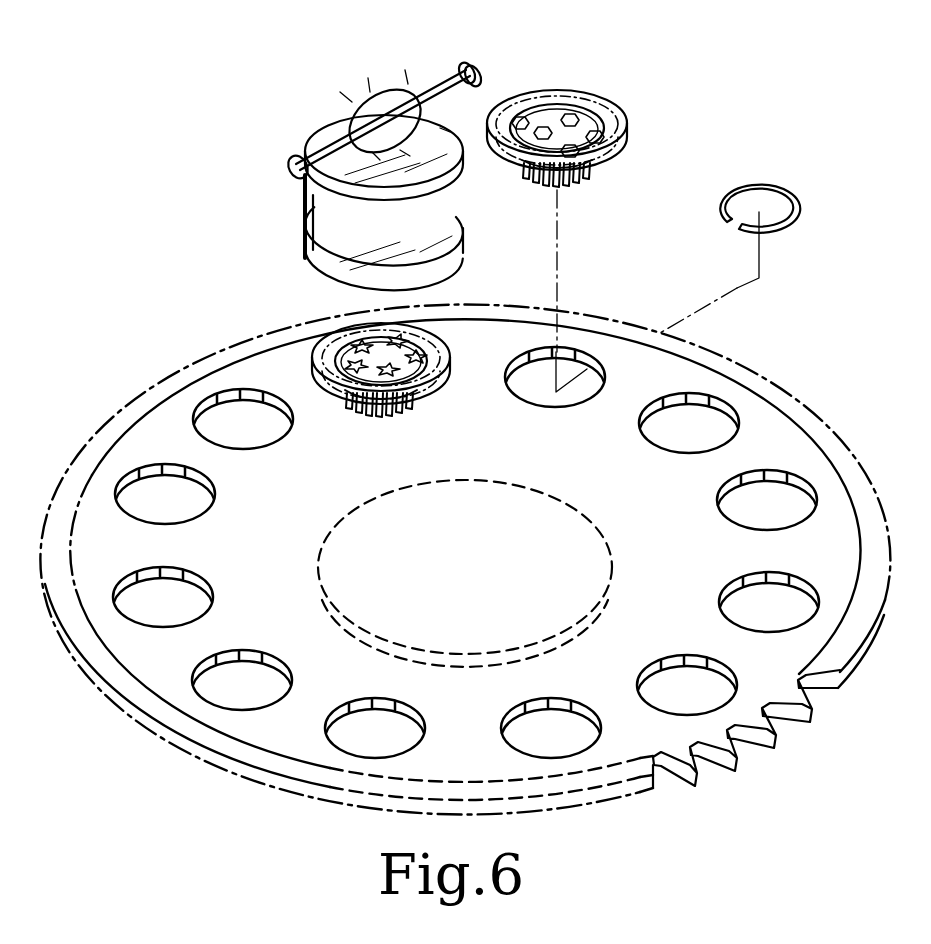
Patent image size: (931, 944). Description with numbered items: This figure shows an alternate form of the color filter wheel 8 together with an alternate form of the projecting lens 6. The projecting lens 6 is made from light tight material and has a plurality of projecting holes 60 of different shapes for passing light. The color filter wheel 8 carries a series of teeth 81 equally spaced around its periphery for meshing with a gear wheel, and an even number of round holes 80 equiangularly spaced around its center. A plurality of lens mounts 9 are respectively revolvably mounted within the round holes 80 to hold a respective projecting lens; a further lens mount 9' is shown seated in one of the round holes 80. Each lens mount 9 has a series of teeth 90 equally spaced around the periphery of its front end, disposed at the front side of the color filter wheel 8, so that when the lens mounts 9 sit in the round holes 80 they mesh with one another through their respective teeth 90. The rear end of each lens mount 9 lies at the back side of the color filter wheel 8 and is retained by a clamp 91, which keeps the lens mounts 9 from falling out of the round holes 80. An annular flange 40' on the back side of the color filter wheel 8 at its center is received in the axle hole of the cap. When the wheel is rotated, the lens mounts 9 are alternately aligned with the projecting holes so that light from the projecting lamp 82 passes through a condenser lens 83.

The projecting lens 6 is at (580, 110).
The color filter wheel 8 is at (812, 415).
The lens mount 9 is at (606, 130).
The bearing with star nuts 9' is at (339, 338).
The annular flange 40' is at (415, 573).
The projecting holes 60 is at (540, 128).
The round holes 80 is at (240, 402).
The teeth 81 is at (675, 778).
The projecting lamp 82 is at (375, 118).
The condenser lens 83 is at (305, 150).
The teeth 90 is at (575, 190).
The clamp 91 is at (800, 200).